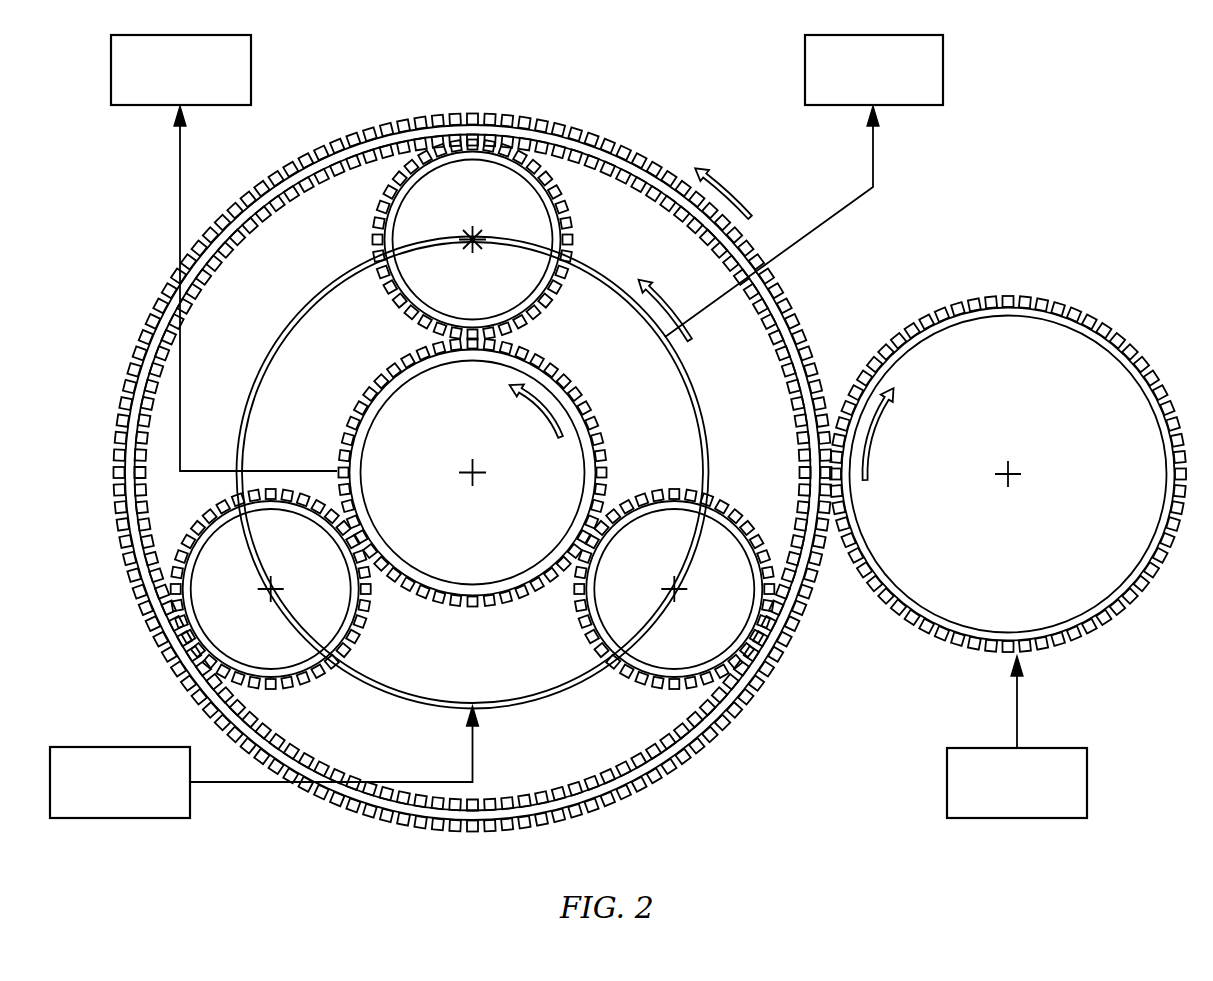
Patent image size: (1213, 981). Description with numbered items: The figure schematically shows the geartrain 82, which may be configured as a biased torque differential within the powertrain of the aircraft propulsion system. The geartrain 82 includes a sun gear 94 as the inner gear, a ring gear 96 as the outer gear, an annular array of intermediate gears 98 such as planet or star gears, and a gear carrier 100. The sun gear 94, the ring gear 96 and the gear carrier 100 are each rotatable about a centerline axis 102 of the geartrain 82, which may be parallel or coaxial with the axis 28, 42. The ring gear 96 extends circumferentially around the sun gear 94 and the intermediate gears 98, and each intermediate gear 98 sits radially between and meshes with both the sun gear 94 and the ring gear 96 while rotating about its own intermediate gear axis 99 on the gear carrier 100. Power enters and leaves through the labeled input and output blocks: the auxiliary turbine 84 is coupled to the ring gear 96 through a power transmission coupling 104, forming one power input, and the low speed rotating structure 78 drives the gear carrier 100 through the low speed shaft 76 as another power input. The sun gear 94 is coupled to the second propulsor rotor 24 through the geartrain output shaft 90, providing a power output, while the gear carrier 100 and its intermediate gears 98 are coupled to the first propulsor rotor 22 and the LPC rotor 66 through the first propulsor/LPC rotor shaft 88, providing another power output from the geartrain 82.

The geartrain 82 is at (453, 463).
The ring gear 96 is at (627, 148).
The gear carrier 100 is at (586, 260).
The sun gear 94 is at (480, 605).
The axis 28 is at (474, 512).
The axis 42 is at (474, 512).
The centerline axis 102 is at (472, 478).
The intermediate gears 98 is at (377, 213).
The intermediate gear axis 99 is at (473, 240).
The second propulsor rotor 24 is at (246, 253).
The geartrain output shaft 90 is at (251, 72).
The first propulsor rotor 22 is at (794, 186).
The LPC rotor 66 is at (794, 186).
The first propulsor/LPC rotor shaft 88 is at (805, 62).
The low speed shaft 76 is at (264, 789).
The low speed rotating structure 78 is at (190, 800).
The auxiliary turbine 84 is at (1005, 558).
The power transmission coupling 104 is at (947, 782).